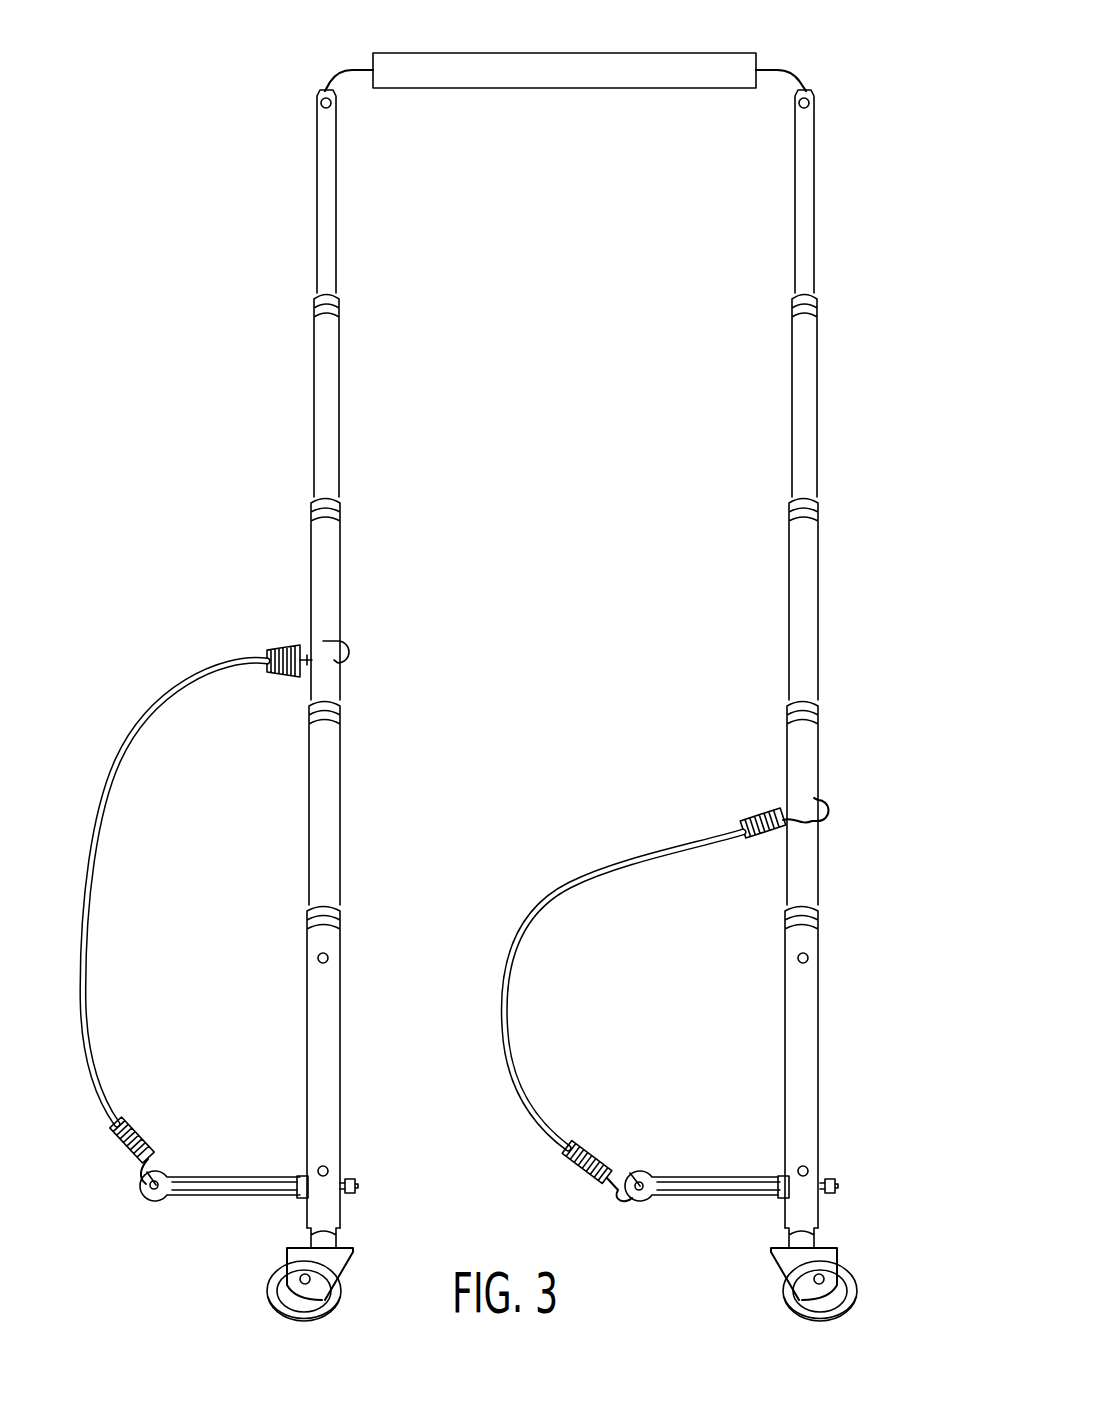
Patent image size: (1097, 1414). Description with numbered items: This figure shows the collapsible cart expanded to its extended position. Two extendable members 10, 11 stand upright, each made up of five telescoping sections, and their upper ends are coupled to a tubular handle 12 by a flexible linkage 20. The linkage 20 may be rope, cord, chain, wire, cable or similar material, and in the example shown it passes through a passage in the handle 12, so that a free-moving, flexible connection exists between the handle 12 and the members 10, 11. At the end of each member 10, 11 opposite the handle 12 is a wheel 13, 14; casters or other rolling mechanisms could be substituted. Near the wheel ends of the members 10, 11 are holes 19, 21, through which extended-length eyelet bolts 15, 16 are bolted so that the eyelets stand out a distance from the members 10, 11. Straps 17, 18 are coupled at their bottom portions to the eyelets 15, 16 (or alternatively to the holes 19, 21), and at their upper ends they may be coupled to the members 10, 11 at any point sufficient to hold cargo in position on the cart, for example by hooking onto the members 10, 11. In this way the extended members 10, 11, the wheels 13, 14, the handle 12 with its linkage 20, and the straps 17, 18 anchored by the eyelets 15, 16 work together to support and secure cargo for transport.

The extendable member 10 is at (802, 452).
The extendable member 11 is at (323, 628).
The handle 12 is at (500, 82).
The wheel 13 is at (793, 1298).
The wheel 14 is at (265, 1276).
The eyelet bolt 15 is at (760, 1181).
The eyelet bolt 16 is at (215, 1192).
The strap 17 is at (107, 790).
The strap 18 is at (512, 1003).
The hole 19 is at (830, 1178).
The linkage 20 is at (791, 68).
The hole 21 is at (305, 1185).